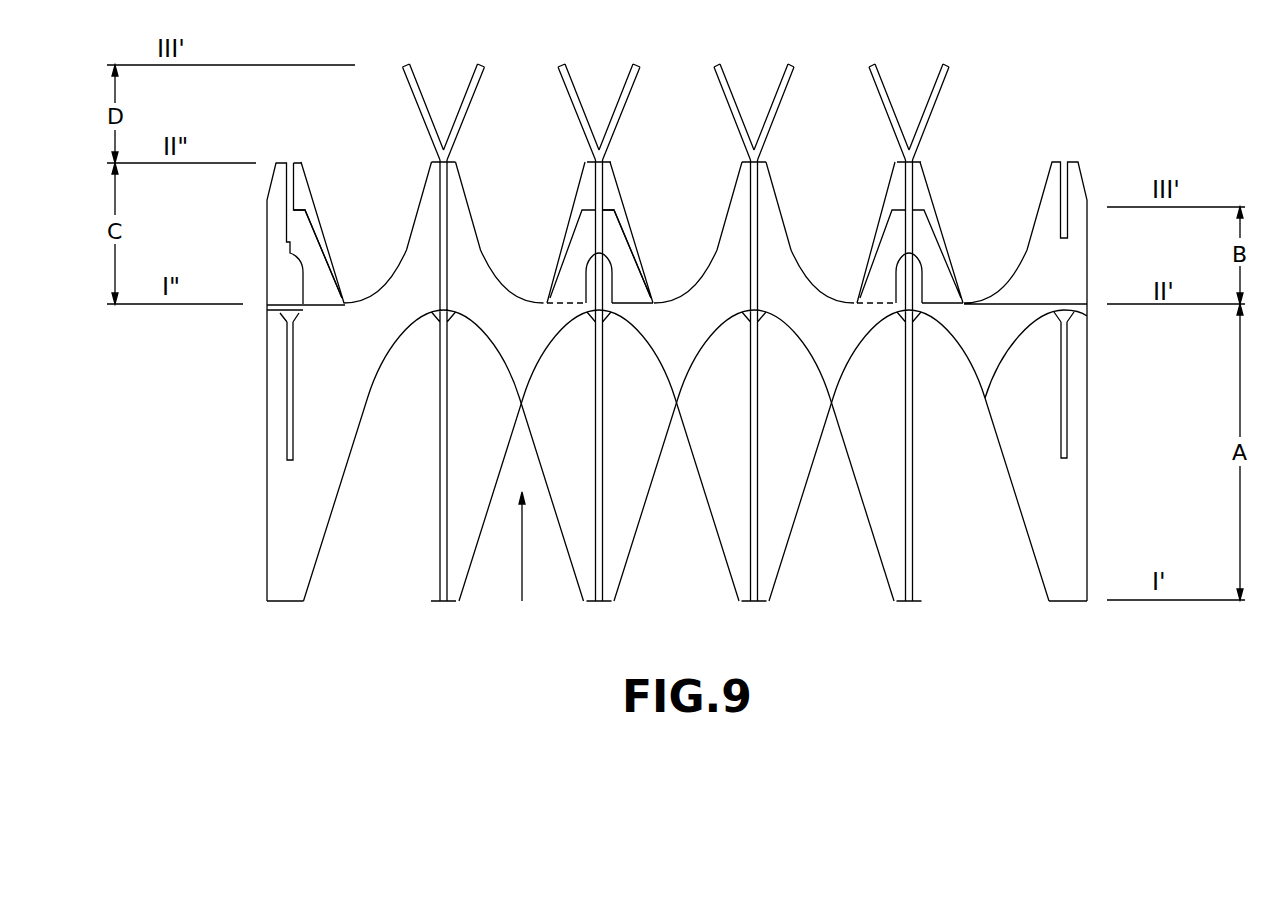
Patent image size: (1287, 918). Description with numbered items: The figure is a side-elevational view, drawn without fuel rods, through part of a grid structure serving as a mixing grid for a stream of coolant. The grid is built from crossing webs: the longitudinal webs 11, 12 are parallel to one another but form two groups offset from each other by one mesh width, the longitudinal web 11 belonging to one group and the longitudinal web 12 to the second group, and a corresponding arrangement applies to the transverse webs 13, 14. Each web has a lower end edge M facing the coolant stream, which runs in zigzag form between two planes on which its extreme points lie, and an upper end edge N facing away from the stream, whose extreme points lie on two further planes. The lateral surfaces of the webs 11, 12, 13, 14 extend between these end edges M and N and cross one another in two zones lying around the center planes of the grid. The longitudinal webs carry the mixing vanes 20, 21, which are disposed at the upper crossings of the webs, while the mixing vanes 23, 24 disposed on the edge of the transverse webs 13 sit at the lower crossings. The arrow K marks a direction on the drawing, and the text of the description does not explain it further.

The longitudinal web 11 is at (604, 183).
The longitudinal web 12 is at (777, 200).
The transverse web 13 is at (470, 265).
The transverse web 14 is at (303, 188).
The mixing vane 20 is at (733, 95).
The mixing vane 21 is at (788, 84).
The mixing vane 23 is at (567, 292).
The mixing vane 24 is at (322, 284).
The upper end edge N is at (810, 272).
The lower end edge M is at (778, 570).
The direction arrow K is at (523, 586).